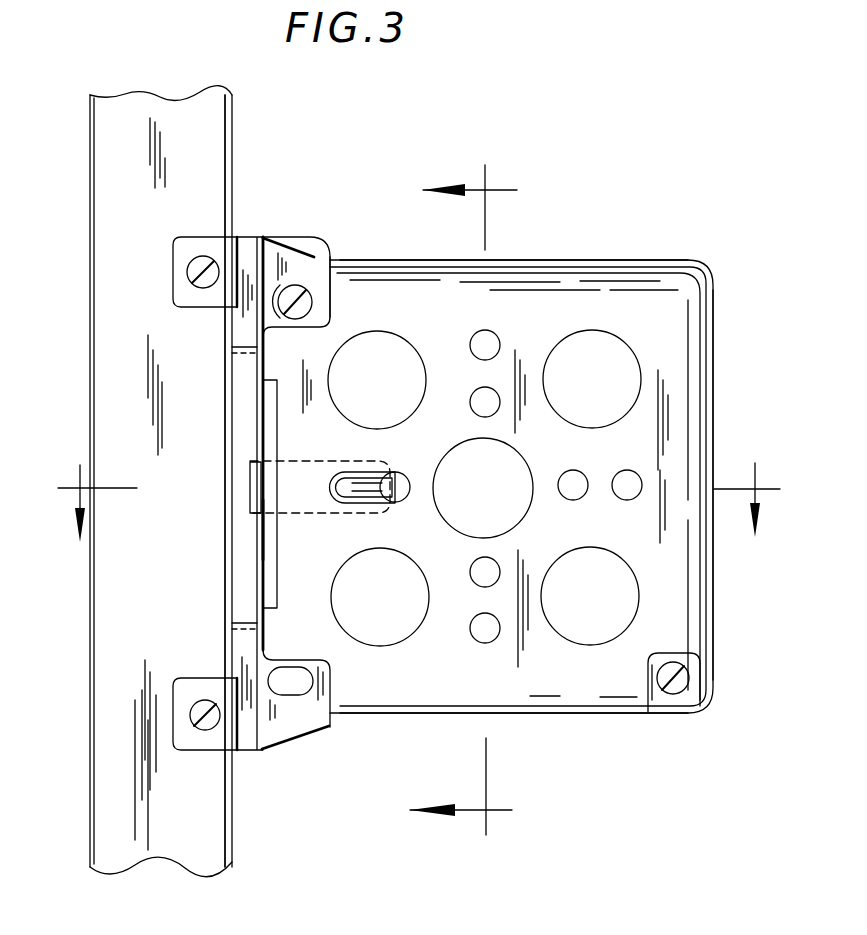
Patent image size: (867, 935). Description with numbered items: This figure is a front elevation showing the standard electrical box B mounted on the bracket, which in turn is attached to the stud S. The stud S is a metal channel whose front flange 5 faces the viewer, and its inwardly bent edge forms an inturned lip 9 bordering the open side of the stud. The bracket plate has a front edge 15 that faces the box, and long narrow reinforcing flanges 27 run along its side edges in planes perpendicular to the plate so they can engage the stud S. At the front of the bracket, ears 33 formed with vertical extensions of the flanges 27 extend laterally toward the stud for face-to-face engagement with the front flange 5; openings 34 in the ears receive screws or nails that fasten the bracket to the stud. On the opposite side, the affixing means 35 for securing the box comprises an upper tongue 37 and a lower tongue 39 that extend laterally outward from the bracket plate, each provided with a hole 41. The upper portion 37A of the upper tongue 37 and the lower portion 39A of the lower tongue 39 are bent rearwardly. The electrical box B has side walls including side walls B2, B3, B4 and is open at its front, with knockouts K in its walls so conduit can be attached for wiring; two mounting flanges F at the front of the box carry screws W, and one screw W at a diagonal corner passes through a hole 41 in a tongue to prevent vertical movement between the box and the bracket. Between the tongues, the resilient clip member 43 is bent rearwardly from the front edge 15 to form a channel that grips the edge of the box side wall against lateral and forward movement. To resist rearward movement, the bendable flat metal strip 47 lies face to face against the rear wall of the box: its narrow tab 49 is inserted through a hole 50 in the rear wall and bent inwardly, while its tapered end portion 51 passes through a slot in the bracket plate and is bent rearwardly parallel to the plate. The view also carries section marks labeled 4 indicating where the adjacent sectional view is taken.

The stud S is at (163, 94).
The front flange 5 is at (80, 158).
The inturned lip 9 is at (235, 130).
The front edge 15 is at (262, 533).
The reinforcing flanges 27 is at (246, 252).
The ears 33 is at (178, 253).
The openings 34 is at (203, 254).
The affixing means 35 is at (345, 122).
The upper tongue 37 is at (318, 283).
The upper portion of the upper tongue 37A is at (310, 252).
The lower tongue 39 is at (307, 708).
The lower portion of the lower tongue 39A is at (313, 733).
The holes 41 is at (272, 292).
The clip member 43 is at (265, 396).
The bendable flat metal strip 47 is at (308, 456).
The tab 49 is at (366, 503).
The hole 50 is at (388, 476).
The tapered end portion 51 is at (250, 473).
The screws W is at (305, 308).
The knockouts K is at (555, 357).
The electrical box B is at (698, 260).
The side wall B2 is at (573, 260).
The side wall B3 is at (713, 410).
The side wall B4 is at (556, 716).
The mounting flanges F is at (657, 694).
The section line 4- 4 is at (419, 502).